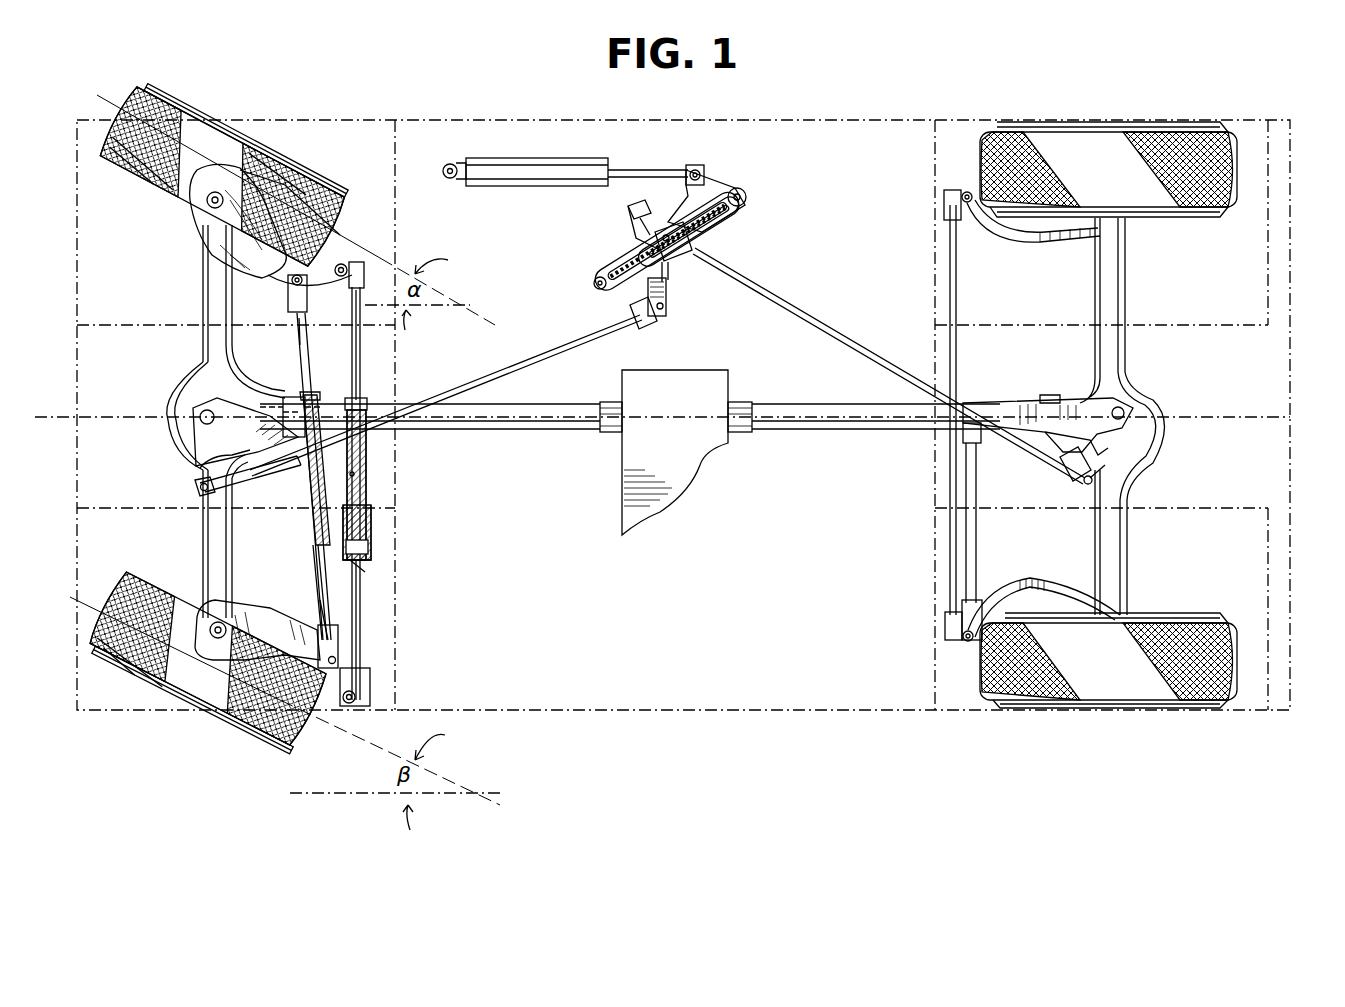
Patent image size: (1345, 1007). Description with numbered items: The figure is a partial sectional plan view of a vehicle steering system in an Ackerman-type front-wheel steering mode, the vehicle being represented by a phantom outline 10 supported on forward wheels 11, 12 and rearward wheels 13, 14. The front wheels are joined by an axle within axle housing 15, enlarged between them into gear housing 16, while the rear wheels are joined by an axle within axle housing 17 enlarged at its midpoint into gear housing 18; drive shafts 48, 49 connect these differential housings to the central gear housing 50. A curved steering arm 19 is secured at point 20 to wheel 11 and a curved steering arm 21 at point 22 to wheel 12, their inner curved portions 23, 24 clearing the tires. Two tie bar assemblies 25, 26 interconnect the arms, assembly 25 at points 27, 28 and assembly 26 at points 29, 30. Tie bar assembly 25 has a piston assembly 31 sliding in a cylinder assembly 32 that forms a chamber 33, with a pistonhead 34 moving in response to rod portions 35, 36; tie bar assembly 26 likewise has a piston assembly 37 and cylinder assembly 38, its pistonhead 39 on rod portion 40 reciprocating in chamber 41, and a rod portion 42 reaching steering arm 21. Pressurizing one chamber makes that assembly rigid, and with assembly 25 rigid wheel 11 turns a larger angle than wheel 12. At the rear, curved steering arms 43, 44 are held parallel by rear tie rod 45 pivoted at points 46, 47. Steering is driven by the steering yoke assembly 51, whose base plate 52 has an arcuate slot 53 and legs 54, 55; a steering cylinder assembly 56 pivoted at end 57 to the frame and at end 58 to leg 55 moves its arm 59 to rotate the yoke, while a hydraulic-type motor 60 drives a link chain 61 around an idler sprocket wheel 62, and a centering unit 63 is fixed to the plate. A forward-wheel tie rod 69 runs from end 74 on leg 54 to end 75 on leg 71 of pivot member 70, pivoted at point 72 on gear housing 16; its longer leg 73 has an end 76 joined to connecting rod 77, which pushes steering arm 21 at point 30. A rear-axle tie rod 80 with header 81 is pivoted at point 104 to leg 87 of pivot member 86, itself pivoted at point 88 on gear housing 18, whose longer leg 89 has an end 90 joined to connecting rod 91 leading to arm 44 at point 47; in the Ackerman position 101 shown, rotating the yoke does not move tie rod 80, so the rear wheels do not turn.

The phantom outline 10 is at (758, 107).
The forward wheel 11 is at (160, 80).
The forward wheel 12 is at (222, 722).
The rearward wheel 13 is at (1138, 122).
The rearward wheel 14 is at (1162, 704).
The axle housing 15 is at (203, 298).
The gear housing 16 is at (182, 390).
The axle housing 17 is at (1127, 572).
The gear housing 18 is at (1136, 385).
The curved steering arm 19 is at (218, 232).
The securing point 20 is at (207, 203).
The curved steering arm 21 is at (203, 612).
The securing point 22 is at (220, 662).
The inner curved portion 23 is at (272, 288).
The inner curved portion 24 is at (258, 652).
The tie bar assembly 25 is at (289, 360).
The tie bar assembly 26 is at (371, 374).
The securing point 27 is at (309, 290).
The securing point 28 is at (340, 650).
The securing point 29 is at (344, 258).
The securing point 30 is at (350, 706).
The piston assembly 31 is at (298, 522).
The cylinder assembly 32 is at (312, 392).
The chamber 33 is at (353, 399).
The pistonhead 34 is at (283, 405).
The rod portion 35 is at (318, 560).
The rod portion 36 is at (307, 343).
The piston assembly 37 is at (376, 492).
The cylinder assembly 38 is at (380, 544).
The pistonhead 39 is at (372, 528).
The rod portion 40 is at (360, 352).
The chamber 41 is at (372, 549).
The rod portion 42 is at (362, 598).
The curved steering arm 43 is at (1025, 240).
The curved steering arm 44 is at (1030, 580).
The rear tie rod 45 is at (950, 356).
The pivot point 46 is at (967, 190).
The pivot point 47 is at (963, 642).
The drive shaft 48 is at (505, 432).
The drive shaft 49 is at (860, 432).
The central gear housing 50 is at (673, 458).
The steering yoke assembly 51 is at (710, 252).
The base plate 52 is at (631, 238).
The arcuately extending slot 53 is at (600, 270).
The projecting leg 54 is at (647, 300).
The projecting leg 55 is at (718, 187).
The steering cylinder assembly 56 is at (553, 160).
The end 57 is at (449, 164).
The end 58 is at (700, 165).
The arm 59 is at (662, 170).
The hydraulic-type motor 60 is at (748, 197).
The link chain 61 is at (728, 233).
The idler sprocket wheel 62 is at (594, 290).
The piston and cylinder centering unit 63 is at (628, 208).
The forward-wheel tie rod 69 is at (505, 366).
The pivot member 70 is at (182, 442).
The leg 71 is at (200, 472).
The pivot point 72 is at (200, 415).
The leg 73 is at (292, 470).
The end 74 is at (660, 322).
The end 75 is at (200, 496).
The end 76 is at (360, 472).
The connecting rod 77 is at (338, 581).
The rear-axle tie rod 80 is at (850, 345).
The header 81 is at (670, 284).
The pivot member 86 is at (1140, 449).
The leg 87 is at (1114, 476).
The pivot point 88 is at (1126, 412).
The leg 89 is at (1052, 398).
The end 90 is at (957, 440).
The connecting rod 91 is at (978, 545).
The Ackerman-type front-wheel steering position 101 is at (952, 105).
The pivot point 104 is at (1075, 478).